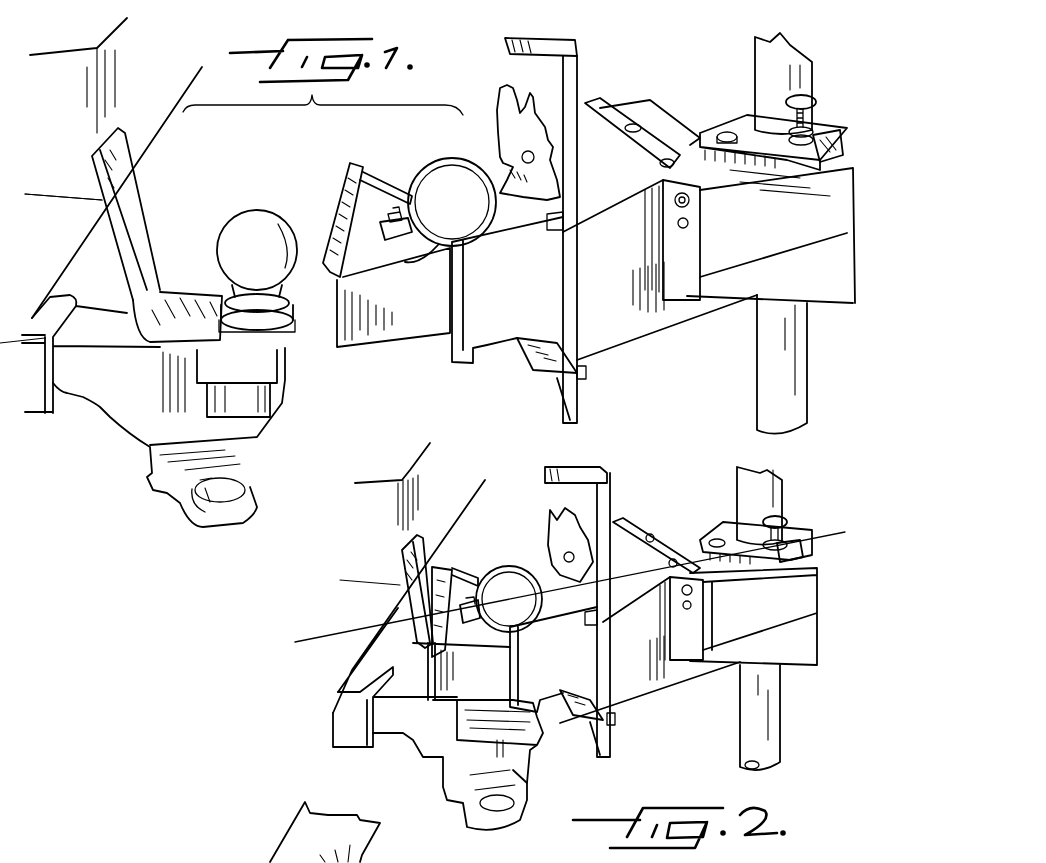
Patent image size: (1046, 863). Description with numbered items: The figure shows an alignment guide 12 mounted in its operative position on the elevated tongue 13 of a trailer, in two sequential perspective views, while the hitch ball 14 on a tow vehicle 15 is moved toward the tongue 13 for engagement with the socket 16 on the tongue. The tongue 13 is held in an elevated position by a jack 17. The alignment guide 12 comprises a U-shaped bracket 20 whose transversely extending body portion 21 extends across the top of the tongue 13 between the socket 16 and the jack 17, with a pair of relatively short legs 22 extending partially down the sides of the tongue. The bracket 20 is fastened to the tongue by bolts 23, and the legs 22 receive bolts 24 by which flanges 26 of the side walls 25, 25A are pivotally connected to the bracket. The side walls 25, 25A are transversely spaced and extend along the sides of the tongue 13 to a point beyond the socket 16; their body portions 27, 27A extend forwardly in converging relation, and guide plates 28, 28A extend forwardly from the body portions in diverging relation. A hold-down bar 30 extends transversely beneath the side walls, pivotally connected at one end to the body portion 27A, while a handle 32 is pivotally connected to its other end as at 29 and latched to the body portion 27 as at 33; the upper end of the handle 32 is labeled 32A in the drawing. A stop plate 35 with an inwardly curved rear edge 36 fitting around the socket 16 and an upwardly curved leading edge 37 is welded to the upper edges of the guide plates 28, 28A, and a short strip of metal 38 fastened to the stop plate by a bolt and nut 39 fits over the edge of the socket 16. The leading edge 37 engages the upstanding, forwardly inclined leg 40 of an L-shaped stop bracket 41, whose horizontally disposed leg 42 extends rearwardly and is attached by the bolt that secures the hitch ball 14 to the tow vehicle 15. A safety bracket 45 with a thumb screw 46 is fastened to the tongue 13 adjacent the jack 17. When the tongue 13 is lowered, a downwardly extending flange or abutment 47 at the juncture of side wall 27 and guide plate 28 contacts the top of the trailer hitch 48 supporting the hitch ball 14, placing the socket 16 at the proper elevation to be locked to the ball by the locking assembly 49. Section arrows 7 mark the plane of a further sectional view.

In FIG. 2, the section line 7- 7 is at (334, 602).
In FIG. 1, the alignment guide 12 is at (611, 331).
In FIG. 2, the alignment guide 12 is at (634, 685).
In FIG. 1, the tongue 13 is at (776, 287).
In FIG. 2, the tongue 13 is at (794, 664).
In FIG. 1, the hitch ball 14 is at (240, 216).
In FIG. 1, the tow vehicle 15 is at (146, 127).
In FIG. 2, the tow vehicle 15 is at (420, 477).
In FIG. 1, the socket 16 is at (452, 176).
In FIG. 2, the socket 16 is at (500, 568).
In FIG. 1, the jack 17 is at (778, 52).
In FIG. 2, the jack 17 is at (760, 480).
In FIG. 1, the U-shaped bracket 20 is at (665, 135).
In FIG. 2, the U-shaped bracket 20 is at (655, 525).
In FIG. 1, the body portion 21 is at (660, 147).
In FIG. 1, the legs 22 is at (588, 104).
In FIG. 2, the legs 22 is at (656, 545).
In FIG. 1, the bolts 23 is at (632, 146).
In FIG. 2, the bolts 23 is at (675, 560).
In FIG. 1, the bolts 24 is at (692, 205).
In FIG. 2, the bolts 24 is at (697, 598).
In FIG. 1, the side wall 25 is at (640, 292).
In FIG. 2, the side wall 25 is at (668, 668).
In FIG. 1, the side wall 25A is at (630, 107).
In FIG. 1, the flange 26 is at (680, 250).
In FIG. 2, the flange 26 is at (690, 630).
In FIG. 1, the body portion 27 is at (478, 292).
In FIG. 2, the body portion 27 is at (575, 675).
In FIG. 1, the body portion 27A is at (495, 140).
In FIG. 1, the guide plate 28 is at (352, 338).
In FIG. 2, the guide plate 28 is at (436, 702).
In FIG. 1, the guide plate 28A is at (402, 172).
In FIG. 1, the pivotal connection 29 is at (590, 378).
In FIG. 2, the pivotal connection 29 is at (612, 725).
In FIG. 1, the hold-down bar 30 is at (533, 360).
In FIG. 2, the hold-down bar 30 is at (592, 712).
In FIG. 1, the handle 32 is at (565, 298).
In FIG. 2, the handle 32 is at (612, 490).
In FIG. 1, the bar top flange 32A is at (560, 38).
In FIG. 2, the bar top flange 32A is at (552, 472).
In FIG. 1, the latch 33 is at (531, 197).
In FIG. 2, the latch 33 is at (545, 585).
In FIG. 1, the stop plate 35 is at (370, 196).
In FIG. 2, the stop plate 35 is at (478, 580).
In FIG. 1, the inwardly curved rear edge 36 is at (393, 270).
In FIG. 1, the upwardly curved leading edge 37 is at (345, 200).
In FIG. 2, the upwardly curved leading edge 37 is at (432, 598).
In FIG. 1, the metal strip 38 is at (392, 226).
In FIG. 2, the metal strip 38 is at (465, 625).
In FIG. 1, the bolt and nut 39 is at (406, 210).
In FIG. 2, the bolt and nut 39 is at (482, 610).
In FIG. 1, the upstanding leg 40 is at (140, 222).
In FIG. 2, the upstanding leg 40 is at (430, 545).
In FIG. 1, the L-shaped stop bracket 41 is at (105, 236).
In FIG. 2, the L-shaped stop bracket 41 is at (398, 562).
In FIG. 1, the horizontally disposed leg 42 is at (188, 300).
In FIG. 1, the safety bracket 45 is at (790, 148).
In FIG. 2, the safety bracket 45 is at (778, 555).
In FIG. 1, the thumb screw 46 is at (808, 100).
In FIG. 2, the thumb screw 46 is at (785, 515).
In FIG. 1, the flange 47 is at (475, 365).
In FIG. 2, the flange 47 is at (527, 745).
In FIG. 1, the trailer hitch 48 is at (217, 354).
In FIG. 2, the trailer hitch 48 is at (470, 700).
In FIG. 1, the locking assembly 49 is at (511, 82).
In FIG. 2, the locking assembly 49 is at (537, 518).